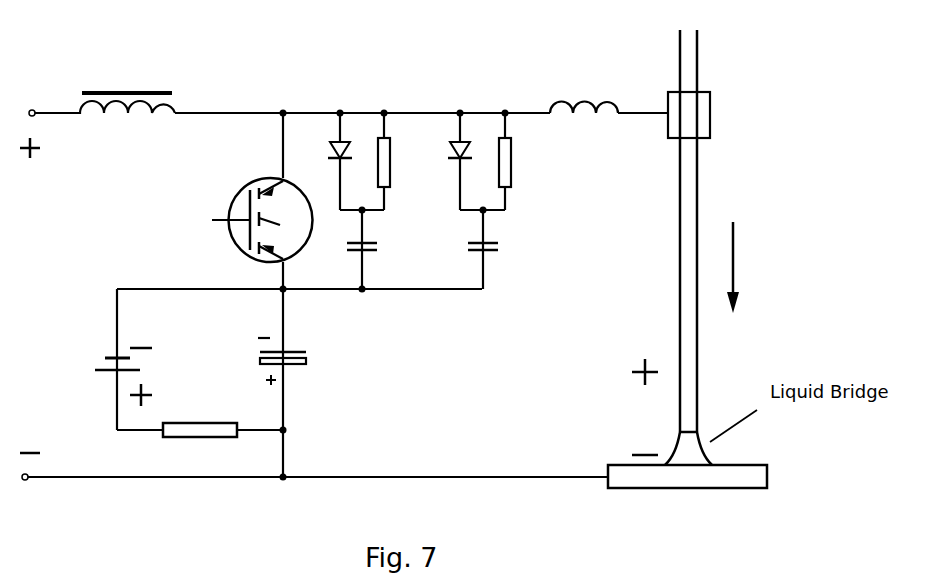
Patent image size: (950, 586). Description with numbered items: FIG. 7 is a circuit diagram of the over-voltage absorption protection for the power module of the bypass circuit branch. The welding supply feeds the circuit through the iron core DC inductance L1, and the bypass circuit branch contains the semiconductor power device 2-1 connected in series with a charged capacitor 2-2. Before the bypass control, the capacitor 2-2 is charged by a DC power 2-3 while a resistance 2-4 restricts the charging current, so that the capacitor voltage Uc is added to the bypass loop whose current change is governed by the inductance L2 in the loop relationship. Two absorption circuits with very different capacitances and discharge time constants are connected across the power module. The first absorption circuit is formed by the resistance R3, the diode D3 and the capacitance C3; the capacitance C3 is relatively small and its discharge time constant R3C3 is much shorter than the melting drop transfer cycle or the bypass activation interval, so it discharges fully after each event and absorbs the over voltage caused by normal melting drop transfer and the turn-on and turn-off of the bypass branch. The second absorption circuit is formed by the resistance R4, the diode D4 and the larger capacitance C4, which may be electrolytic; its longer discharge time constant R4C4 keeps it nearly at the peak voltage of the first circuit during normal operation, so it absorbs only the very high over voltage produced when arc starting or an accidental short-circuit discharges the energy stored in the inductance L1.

The semiconductor power device 2-1 is at (245, 218).
The charged capacitor 2-2 is at (285, 361).
The DC power 2-3 is at (132, 347).
The resistance 2-4 is at (200, 413).
The iron core DC inductance L1 is at (126, 82).
The inductance of the bypass circuit loop L2 is at (584, 94).
The diode of the first absorption circuit D3 is at (324, 147).
The resistance of the first absorption circuit R3 is at (396, 163).
The capacitance of the first absorption circuit C3 is at (374, 251).
The diode of the second absorption circuit D4 is at (445, 146).
The resistance of the second absorption circuit R4 is at (518, 162).
The capacitance of the second absorption circuit C4 is at (496, 251).